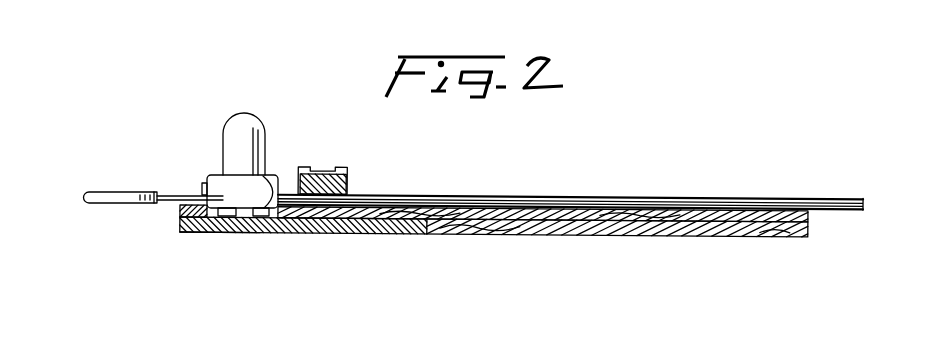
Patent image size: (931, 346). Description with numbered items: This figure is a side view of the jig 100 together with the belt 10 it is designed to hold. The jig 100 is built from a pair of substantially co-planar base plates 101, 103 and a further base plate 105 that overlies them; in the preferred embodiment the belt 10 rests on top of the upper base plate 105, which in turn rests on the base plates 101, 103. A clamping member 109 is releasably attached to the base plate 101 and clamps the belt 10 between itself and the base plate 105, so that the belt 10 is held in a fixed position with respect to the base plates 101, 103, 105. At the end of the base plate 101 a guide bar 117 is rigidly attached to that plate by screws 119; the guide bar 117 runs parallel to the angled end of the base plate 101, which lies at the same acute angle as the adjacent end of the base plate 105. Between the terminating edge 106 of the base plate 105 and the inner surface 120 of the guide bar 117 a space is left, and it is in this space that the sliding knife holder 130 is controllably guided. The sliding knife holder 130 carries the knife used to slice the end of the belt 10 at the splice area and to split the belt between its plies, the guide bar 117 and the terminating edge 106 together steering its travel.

The belt 10 is at (730, 196).
The jig 100 is at (200, 144).
The base plate 101 is at (377, 235).
The base plate 103 is at (577, 234).
The base plate 105 is at (680, 211).
The terminating edge 106 is at (267, 174).
The clamping member 109 is at (328, 166).
The guide bar 117 is at (180, 210).
The screws 119 is at (190, 236).
The inner surface 120 is at (216, 222).
The sliding knife holder 130 is at (221, 151).